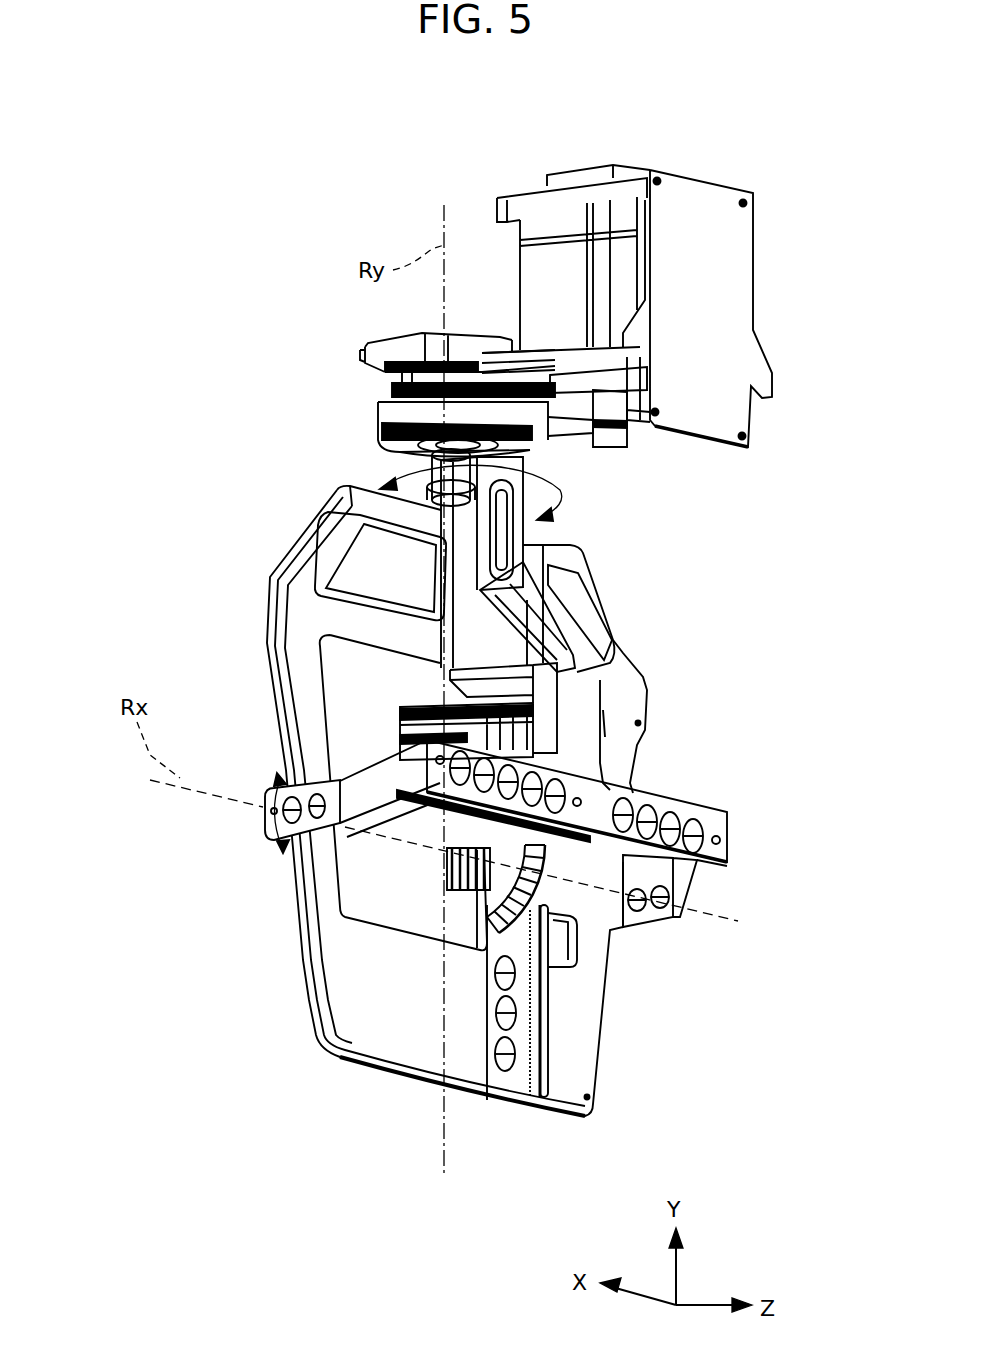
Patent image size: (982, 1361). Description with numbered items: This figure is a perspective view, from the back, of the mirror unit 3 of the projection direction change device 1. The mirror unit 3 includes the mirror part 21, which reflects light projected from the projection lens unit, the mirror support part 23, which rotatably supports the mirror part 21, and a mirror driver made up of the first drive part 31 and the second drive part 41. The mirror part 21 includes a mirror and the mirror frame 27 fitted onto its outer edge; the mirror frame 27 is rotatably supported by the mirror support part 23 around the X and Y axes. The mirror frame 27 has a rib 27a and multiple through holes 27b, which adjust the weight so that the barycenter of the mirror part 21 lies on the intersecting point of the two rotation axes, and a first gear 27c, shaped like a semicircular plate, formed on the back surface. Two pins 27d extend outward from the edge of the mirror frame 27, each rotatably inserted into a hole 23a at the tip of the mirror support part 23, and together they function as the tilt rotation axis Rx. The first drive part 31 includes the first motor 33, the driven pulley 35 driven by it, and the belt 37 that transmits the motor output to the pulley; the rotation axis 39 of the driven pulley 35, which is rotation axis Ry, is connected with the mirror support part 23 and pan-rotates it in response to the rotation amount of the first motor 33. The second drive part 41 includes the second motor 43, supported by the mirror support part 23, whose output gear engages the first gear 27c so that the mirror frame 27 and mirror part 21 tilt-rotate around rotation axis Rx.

The projection direction change device 1 is at (539, 90).
The mirror unit 3 is at (247, 197).
The mirror part 21 is at (718, 674).
The mirror support part 23 is at (718, 815).
The hole 23a is at (288, 790).
The mirror frame 27 is at (645, 682).
The rib 27a is at (540, 1045).
The through holes 27b is at (330, 572).
The first gear 27c is at (560, 885).
The pins 27d is at (270, 813).
The first drive part 31 is at (355, 197).
The first motor 33 is at (570, 180).
The driven pulley 35 is at (400, 456).
The belt 37 is at (555, 400).
The rotation axis 39 is at (430, 474).
The second drive part 41 is at (248, 1022).
The second motor 43 is at (422, 838).